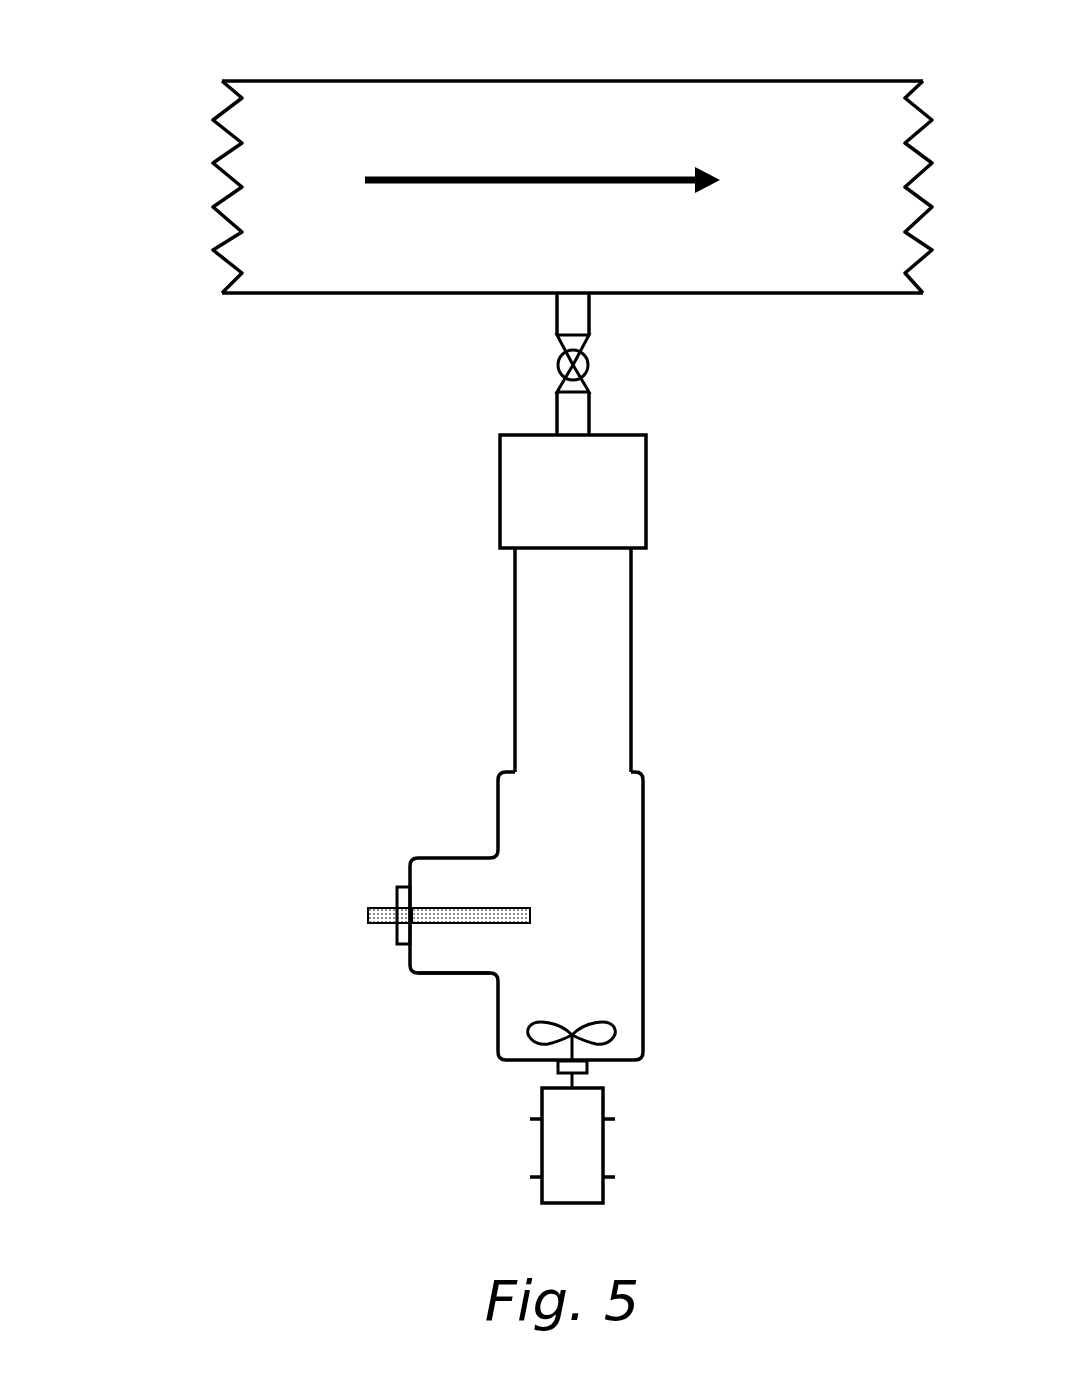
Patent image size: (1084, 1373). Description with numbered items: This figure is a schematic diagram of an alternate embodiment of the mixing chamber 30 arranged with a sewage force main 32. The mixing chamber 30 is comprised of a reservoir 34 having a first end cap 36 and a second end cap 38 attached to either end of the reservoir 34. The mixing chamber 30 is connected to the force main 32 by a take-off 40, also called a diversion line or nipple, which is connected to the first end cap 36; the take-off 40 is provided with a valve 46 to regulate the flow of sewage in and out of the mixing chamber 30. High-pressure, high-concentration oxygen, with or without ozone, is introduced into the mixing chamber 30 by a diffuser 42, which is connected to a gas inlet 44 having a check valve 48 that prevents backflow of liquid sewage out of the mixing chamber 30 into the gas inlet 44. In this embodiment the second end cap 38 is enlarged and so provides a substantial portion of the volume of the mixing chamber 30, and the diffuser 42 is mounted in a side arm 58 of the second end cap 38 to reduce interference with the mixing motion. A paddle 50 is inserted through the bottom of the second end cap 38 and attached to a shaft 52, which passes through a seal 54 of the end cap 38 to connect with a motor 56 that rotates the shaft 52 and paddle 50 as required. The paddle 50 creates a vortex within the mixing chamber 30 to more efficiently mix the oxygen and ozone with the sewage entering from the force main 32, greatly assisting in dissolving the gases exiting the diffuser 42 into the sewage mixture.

The mixing chamber 30 is at (507, 830).
The force main 32 is at (197, 105).
The reservoir 34 is at (618, 617).
The first end cap 36 is at (487, 497).
The second end cap 38 is at (478, 798).
The take-off 40 is at (538, 316).
The diffuser 42 is at (538, 915).
The gas inlet 44 is at (366, 915).
The valve 46 is at (600, 369).
The check valve 48 is at (377, 927).
The paddle 50 is at (615, 1023).
The shaft 52 is at (568, 1053).
The seal 54 is at (605, 1072).
The motor 56 is at (613, 1143).
The side arm 58 is at (450, 973).